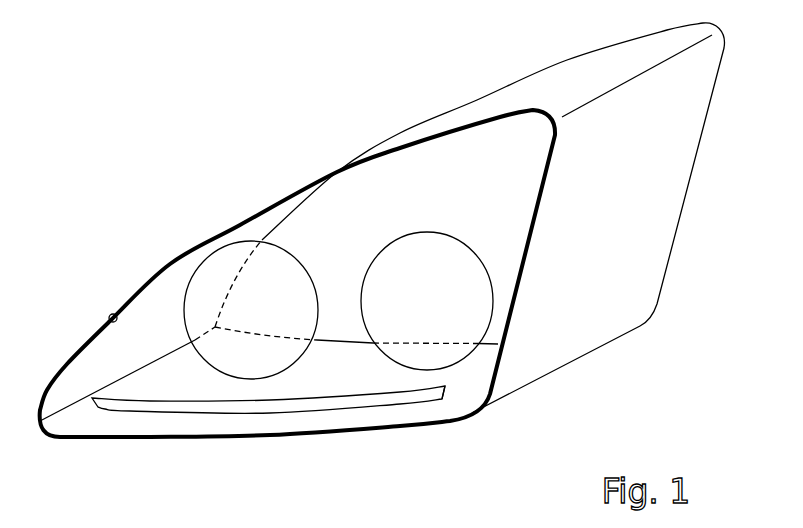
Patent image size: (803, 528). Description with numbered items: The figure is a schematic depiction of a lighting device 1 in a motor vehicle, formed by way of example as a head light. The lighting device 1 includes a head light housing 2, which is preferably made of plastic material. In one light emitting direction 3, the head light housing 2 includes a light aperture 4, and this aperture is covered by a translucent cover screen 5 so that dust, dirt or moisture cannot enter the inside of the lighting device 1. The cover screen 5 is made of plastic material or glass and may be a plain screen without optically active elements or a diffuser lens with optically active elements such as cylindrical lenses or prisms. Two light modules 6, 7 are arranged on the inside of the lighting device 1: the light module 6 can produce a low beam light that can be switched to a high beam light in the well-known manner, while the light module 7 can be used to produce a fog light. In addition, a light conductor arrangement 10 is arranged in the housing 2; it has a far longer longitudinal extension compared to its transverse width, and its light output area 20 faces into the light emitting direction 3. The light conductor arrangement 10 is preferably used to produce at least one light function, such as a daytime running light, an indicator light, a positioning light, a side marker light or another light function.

The lighting device 1 is at (382, 268).
The head light housing 2 is at (477, 102).
The light emitting direction 3 is at (263, 436).
The light aperture 4 is at (110, 322).
The cover screen 5 is at (425, 409).
The light module 6 is at (420, 308).
The light module 7 is at (246, 308).
The light conductor arrangement 10 is at (143, 428).
The light output area 20 is at (358, 401).